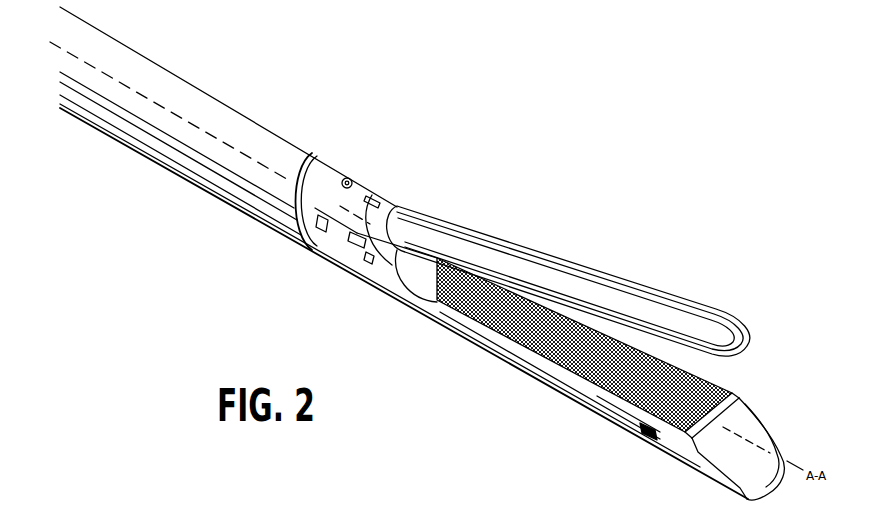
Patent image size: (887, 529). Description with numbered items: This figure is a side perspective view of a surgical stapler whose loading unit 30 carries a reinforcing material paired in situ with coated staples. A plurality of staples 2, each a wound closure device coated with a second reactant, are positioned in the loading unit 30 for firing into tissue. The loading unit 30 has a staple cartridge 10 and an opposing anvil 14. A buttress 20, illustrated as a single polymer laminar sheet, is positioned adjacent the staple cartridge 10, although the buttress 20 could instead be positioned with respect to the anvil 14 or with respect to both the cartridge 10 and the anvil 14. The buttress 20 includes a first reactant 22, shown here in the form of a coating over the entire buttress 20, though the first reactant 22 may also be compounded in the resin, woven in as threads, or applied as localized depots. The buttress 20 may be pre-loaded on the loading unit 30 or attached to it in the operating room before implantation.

The loading unit 30 is at (227, 92).
The anvil 14 is at (722, 312).
The staple cartridge 10 is at (641, 436).
The staple 2 is at (687, 367).
The buttress 20 is at (731, 397).
The first reactant 22 is at (597, 396).